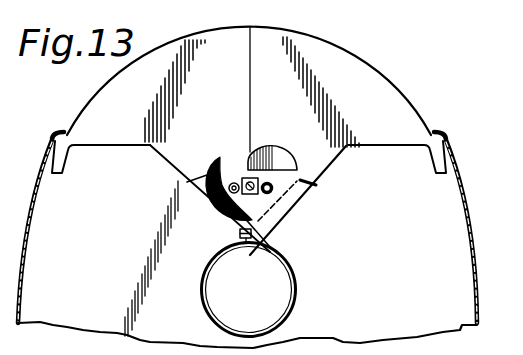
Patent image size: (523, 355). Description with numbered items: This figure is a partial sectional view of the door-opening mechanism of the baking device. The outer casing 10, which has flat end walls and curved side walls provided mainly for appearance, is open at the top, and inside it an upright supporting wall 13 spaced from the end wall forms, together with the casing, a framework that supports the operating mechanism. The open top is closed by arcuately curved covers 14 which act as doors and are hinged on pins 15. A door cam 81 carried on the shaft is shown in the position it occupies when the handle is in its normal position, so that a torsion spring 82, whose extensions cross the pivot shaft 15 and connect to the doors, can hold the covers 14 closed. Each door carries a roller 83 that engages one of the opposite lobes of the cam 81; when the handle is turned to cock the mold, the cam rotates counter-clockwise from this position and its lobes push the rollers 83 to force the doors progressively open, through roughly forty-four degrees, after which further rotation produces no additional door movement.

The outer casing 10 is at (467, 193).
The upright supporting wall 13 is at (433, 228).
The arcuately curved cover 14 is at (110, 83).
The pin 15 is at (245, 245).
The door cam 81 is at (264, 150).
The torsion spring 82 is at (298, 290).
The roller 83 is at (229, 158).